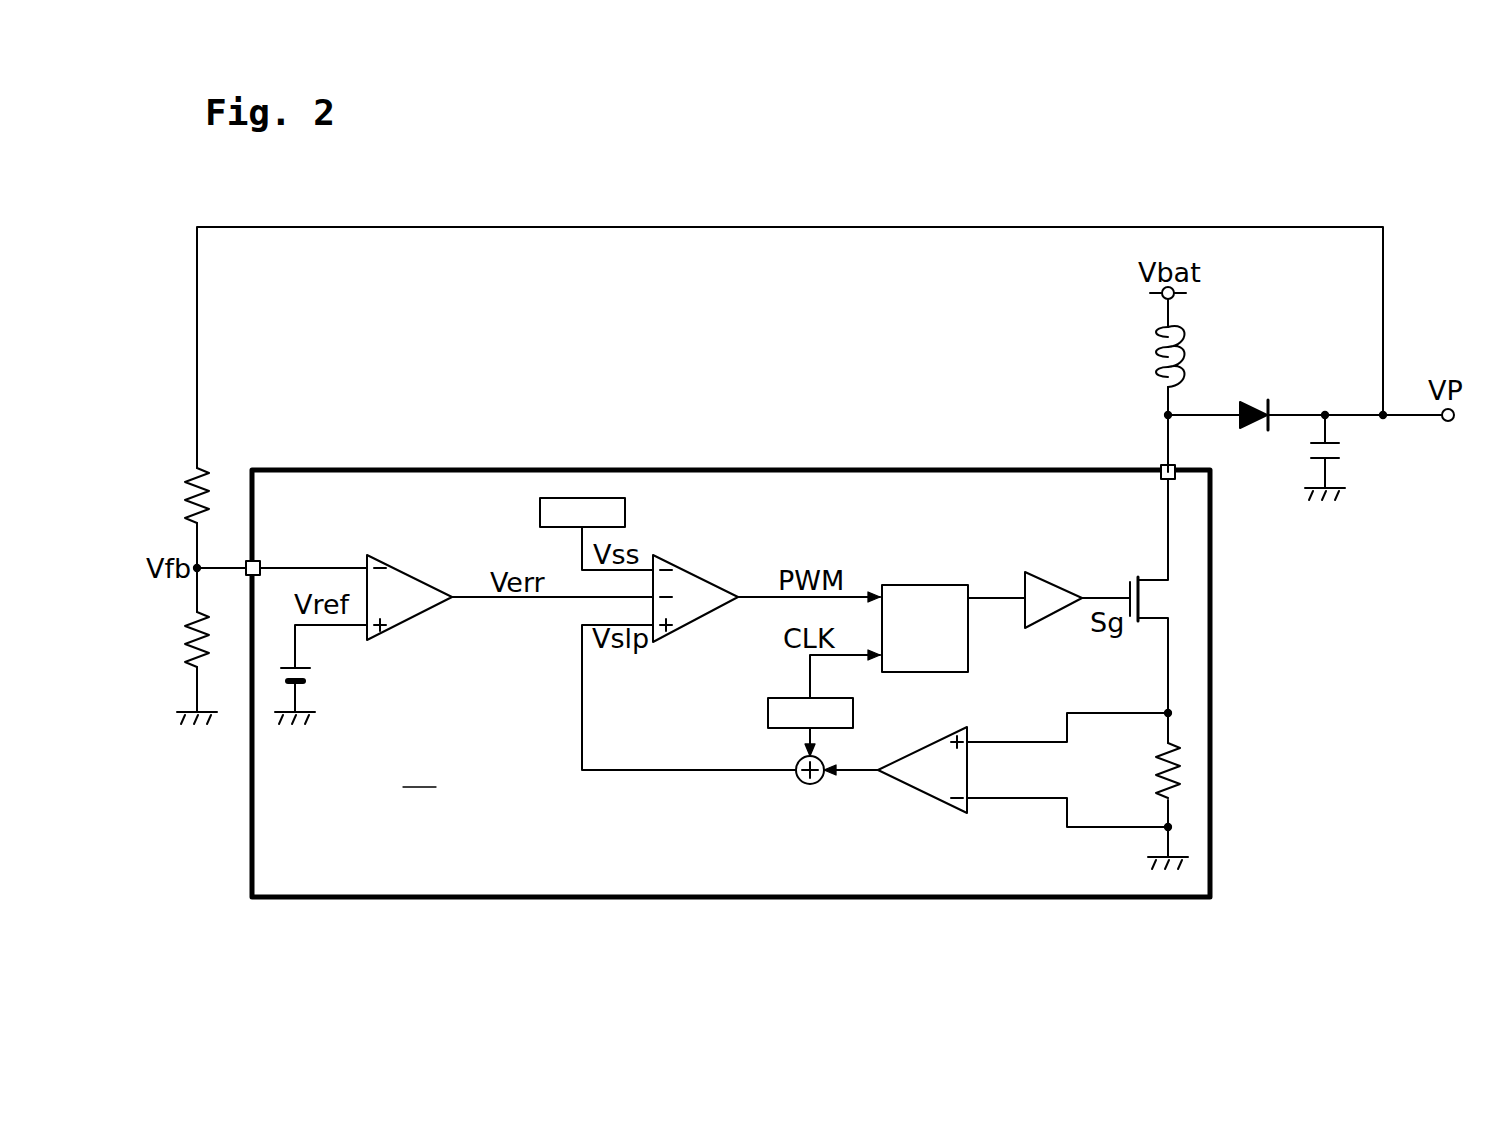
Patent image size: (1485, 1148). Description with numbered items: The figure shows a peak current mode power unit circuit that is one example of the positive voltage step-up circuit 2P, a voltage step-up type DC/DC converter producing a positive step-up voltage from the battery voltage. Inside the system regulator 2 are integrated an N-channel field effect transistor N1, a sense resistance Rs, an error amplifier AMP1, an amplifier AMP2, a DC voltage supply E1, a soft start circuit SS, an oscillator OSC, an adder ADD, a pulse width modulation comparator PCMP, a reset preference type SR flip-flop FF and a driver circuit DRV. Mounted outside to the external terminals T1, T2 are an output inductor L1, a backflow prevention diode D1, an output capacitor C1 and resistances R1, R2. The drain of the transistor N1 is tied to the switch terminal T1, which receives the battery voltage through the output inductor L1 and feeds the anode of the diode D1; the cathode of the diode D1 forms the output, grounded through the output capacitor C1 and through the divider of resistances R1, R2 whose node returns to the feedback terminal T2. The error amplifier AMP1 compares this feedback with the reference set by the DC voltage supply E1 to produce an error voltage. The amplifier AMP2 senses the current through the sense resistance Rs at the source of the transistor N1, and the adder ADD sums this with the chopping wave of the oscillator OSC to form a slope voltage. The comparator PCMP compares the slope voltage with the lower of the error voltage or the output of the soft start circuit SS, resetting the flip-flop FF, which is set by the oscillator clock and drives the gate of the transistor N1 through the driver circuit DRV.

The system regulator 2 is at (732, 468).
The positive voltage step-up circuit 2P is at (419, 771).
The resistance R1 is at (186, 501).
The resistance R2 is at (185, 645).
The external terminal (switch terminal) T1 is at (1158, 468).
The external terminal (feedback terminal) T2 is at (248, 562).
The DC voltage supply E1 is at (311, 683).
The error amplifier AMP1 is at (420, 566).
The soft start circuit SS is at (582, 512).
The PWM comparator PCMP is at (702, 562).
The reset preference type SR flip-flop FF is at (927, 585).
The driver circuit (buffer circuit) DRV is at (1058, 582).
The N-channel field effect transistor N1 is at (1143, 577).
The sense resistance Rs is at (1156, 774).
The amplifier AMP2 is at (922, 810).
The oscillator OSC is at (810, 714).
The adder ADD is at (808, 785).
The output inductor L1 is at (1152, 357).
The backflow prevention diode (Schottky barrier diode) D1 is at (1258, 403).
The output capacitor C1 is at (1340, 453).